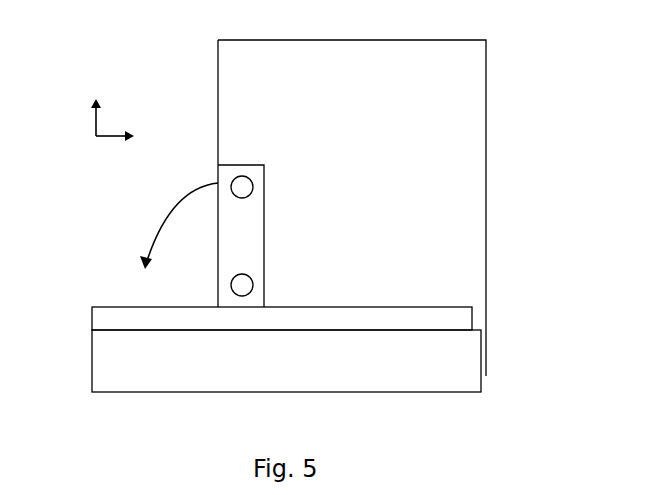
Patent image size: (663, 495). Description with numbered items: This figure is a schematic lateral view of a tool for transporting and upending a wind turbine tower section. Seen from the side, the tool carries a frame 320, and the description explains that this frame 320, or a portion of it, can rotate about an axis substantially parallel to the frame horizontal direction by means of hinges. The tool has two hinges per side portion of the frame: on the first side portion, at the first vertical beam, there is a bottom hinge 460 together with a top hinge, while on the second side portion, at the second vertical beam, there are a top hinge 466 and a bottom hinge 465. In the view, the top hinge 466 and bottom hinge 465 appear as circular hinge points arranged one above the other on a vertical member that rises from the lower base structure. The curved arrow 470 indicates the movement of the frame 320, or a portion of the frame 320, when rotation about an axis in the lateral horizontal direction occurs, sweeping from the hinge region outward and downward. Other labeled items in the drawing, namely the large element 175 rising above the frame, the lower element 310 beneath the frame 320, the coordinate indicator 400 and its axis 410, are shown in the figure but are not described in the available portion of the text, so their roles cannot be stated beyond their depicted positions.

The housing wall 175 is at (228, 64).
The bottom hinge 460 is at (241, 236).
The top hinge 466 is at (242, 187).
The bottom hinge 465 is at (231, 285).
The arrow 470 is at (180, 204).
The frame 320 is at (457, 316).
The base plate 310 is at (378, 374).
The vertical axis 410 is at (96, 112).
The coordinate system 400 is at (110, 142).